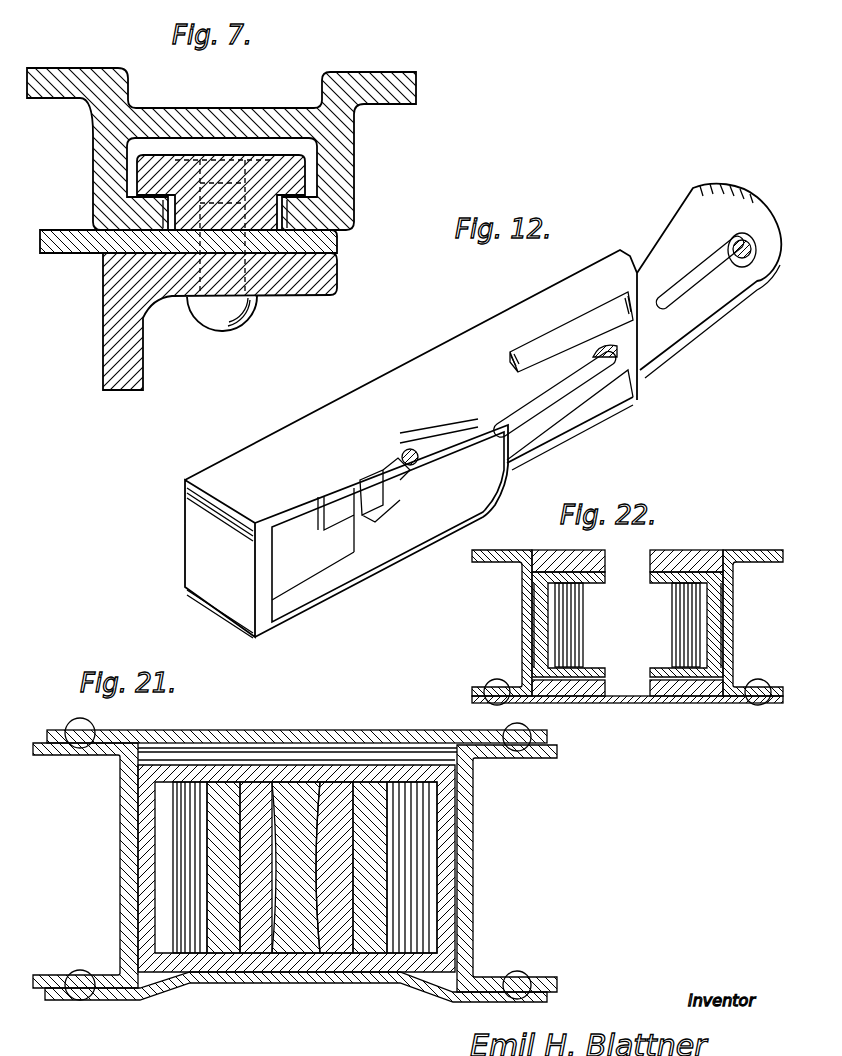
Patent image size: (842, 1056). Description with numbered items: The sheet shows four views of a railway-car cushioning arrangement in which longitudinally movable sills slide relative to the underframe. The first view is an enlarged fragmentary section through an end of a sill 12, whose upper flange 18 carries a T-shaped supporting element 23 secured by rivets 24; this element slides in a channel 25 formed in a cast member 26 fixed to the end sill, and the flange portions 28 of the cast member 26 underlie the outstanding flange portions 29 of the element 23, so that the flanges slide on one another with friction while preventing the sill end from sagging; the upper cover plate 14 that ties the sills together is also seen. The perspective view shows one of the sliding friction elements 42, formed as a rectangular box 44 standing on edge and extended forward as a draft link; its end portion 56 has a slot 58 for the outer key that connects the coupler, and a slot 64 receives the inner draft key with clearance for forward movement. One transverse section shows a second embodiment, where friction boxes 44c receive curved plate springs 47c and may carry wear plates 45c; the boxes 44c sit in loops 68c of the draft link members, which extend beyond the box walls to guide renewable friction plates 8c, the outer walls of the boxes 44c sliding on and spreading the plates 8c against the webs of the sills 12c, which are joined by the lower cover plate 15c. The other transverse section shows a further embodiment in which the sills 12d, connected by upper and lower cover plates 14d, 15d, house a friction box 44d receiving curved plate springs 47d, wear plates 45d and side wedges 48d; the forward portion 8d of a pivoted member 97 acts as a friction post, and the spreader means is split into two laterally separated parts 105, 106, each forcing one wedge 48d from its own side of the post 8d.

In FIG. 7, the sills 12 is at (138, 376).
In FIG. 7, the upper cover plate 14 is at (78, 251).
In FIG. 7, the upper flanges 18 is at (290, 292).
In FIG. 7, the T-shaped supporting elements 23 is at (135, 172).
In FIG. 7, the rivets 24 is at (232, 333).
In FIG. 7, the channels 25 is at (234, 146).
In FIG. 7, the cast members 26 is at (73, 93).
In FIG. 7, the flange portions 28 is at (153, 203).
In FIG. 7, the outstanding flange portions 29 is at (303, 178).
In FIG. 12, the sliding friction elements 42 is at (473, 526).
In FIG. 12, the rectangular boxes 44 is at (320, 550).
In FIG. 12, the end portions 56 is at (708, 322).
In FIG. 12, the slots 58 is at (677, 288).
In FIG. 12, the slots 64 is at (525, 405).
In FIG. 22, the renewable friction plates 8c is at (540, 648).
In FIG. 22, the sills 12c is at (523, 657).
In FIG. 22, the lower cover plate 15c is at (726, 704).
In FIG. 22, the friction boxes 44c is at (742, 566).
In FIG. 22, the wear plates 45c is at (545, 602).
In FIG. 22, the curved plate springs 47c is at (567, 630).
In FIG. 22, the loops 68c is at (671, 556).
In FIG. 21, the forward portion of pivoted member 8d is at (300, 777).
In FIG. 21, the sills 12d is at (125, 823).
In FIG. 21, the upper cover plate 14d is at (257, 735).
In FIG. 21, the lower cover plate 15d is at (300, 976).
In FIG. 21, the friction box 44d is at (363, 770).
In FIG. 21, the wear plates 45d is at (489, 896).
In FIG. 21, the curved plate springs 47d is at (178, 878).
In FIG. 21, the side wedges 48d is at (225, 948).
In FIG. 21, the pivoted member 97 is at (290, 948).
In FIG. 21, the spreader part 105 is at (340, 948).
In FIG. 21, the spreader part 106 is at (255, 948).